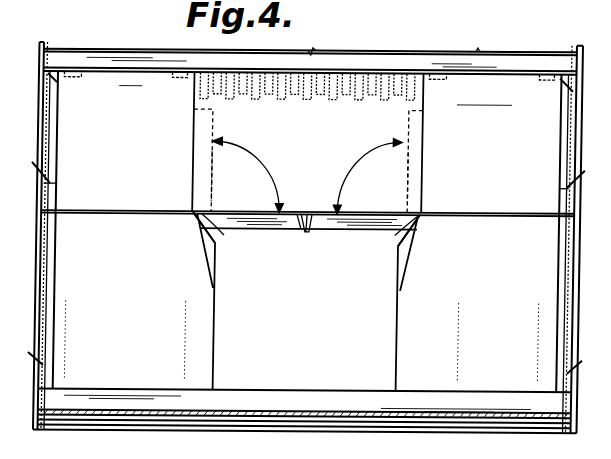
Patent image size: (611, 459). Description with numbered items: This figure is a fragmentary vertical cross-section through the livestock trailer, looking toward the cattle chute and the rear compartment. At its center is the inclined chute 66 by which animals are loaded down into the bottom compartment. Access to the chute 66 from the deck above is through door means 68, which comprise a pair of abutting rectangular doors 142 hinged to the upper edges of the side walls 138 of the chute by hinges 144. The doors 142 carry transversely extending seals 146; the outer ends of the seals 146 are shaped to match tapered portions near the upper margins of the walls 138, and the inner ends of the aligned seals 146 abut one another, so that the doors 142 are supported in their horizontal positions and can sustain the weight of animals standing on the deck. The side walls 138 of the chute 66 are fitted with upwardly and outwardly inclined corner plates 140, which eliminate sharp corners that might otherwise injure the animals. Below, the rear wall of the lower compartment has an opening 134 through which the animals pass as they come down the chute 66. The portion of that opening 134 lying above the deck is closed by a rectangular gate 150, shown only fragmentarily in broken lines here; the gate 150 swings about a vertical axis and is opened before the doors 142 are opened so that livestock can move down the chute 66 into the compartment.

The inclined chute 66 is at (392, 309).
The door means 68 is at (319, 185).
The opening 134 is at (235, 288).
The side walls 138 is at (194, 129).
The corner plates 140 is at (212, 247).
The rectangular doors 142 is at (216, 190).
The hinges 144 is at (216, 221).
The seals 146 is at (304, 212).
The rectangular gate 150 is at (328, 101).